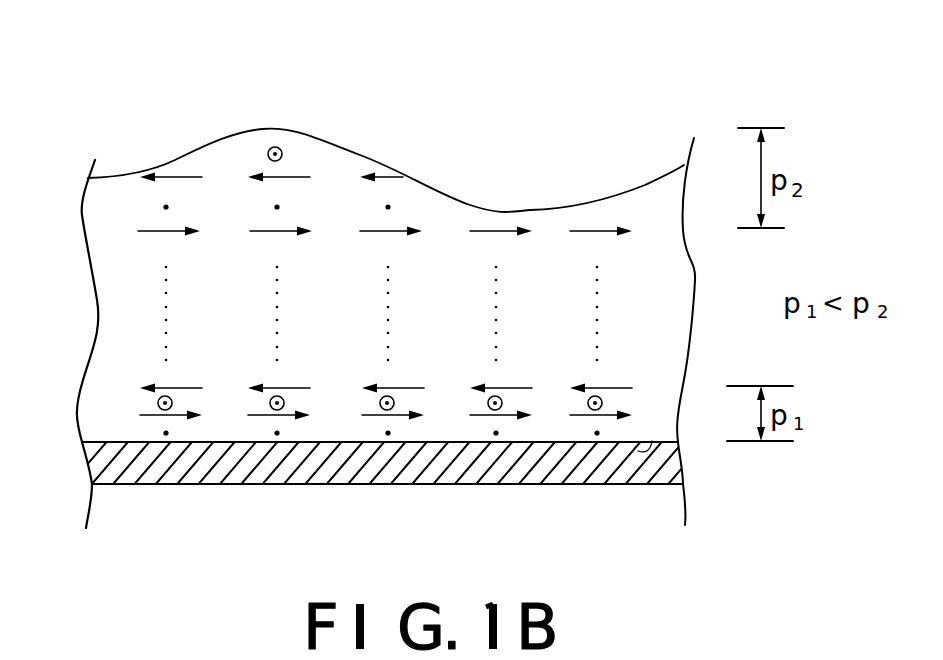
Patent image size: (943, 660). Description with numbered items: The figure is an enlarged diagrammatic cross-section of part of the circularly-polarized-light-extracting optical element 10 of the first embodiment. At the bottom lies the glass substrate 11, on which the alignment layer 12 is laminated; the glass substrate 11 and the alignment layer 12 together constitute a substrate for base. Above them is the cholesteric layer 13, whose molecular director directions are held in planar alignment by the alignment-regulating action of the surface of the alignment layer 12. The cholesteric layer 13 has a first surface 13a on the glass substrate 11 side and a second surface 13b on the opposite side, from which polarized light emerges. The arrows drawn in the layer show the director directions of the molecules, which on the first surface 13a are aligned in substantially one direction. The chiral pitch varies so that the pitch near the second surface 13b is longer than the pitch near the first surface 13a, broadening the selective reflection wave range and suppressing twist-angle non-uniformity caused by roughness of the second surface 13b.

The circularly-polarized-light-extracting optical element 10 is at (708, 140).
The glass substrate 11 is at (675, 503).
The alignment layer 12 is at (682, 467).
The cholesteric layer 13 is at (680, 268).
The first surface 13a is at (653, 440).
The second surface 13b is at (527, 210).